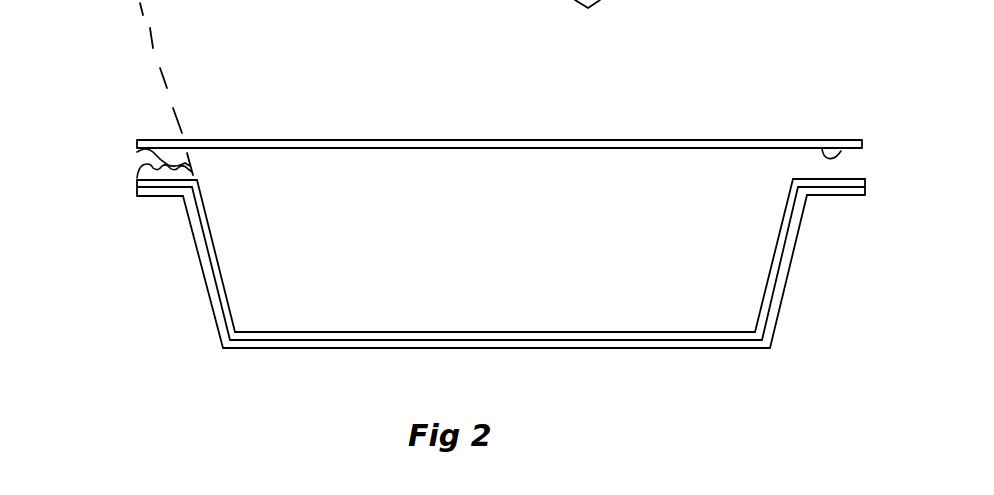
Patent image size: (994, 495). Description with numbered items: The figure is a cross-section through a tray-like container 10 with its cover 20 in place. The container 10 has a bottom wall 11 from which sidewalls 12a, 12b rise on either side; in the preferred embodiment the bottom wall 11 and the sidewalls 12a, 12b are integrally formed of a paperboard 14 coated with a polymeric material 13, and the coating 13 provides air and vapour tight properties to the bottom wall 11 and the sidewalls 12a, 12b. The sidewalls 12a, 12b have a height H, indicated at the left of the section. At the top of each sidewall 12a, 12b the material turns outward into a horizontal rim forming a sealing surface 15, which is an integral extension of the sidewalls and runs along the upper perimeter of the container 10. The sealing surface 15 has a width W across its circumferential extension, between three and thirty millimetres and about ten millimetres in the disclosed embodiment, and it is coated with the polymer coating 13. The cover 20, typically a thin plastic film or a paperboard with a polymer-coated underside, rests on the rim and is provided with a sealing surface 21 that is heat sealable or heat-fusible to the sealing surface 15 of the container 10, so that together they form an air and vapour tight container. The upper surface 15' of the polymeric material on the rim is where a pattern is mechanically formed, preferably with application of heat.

The container 10 is at (544, 252).
The bottom wall 11 is at (543, 334).
The sidewall 12a is at (222, 273).
The sidewall 12b is at (773, 278).
The polymeric coating 13 is at (464, 334).
The paperboard 14 is at (786, 258).
The sealing surface 15 is at (875, 196).
The upper surface 15' is at (829, 103).
The cover 20 is at (490, 140).
The sealing surface 21 is at (833, 177).
The width W is at (137, 152).
The height H is at (140, 350).